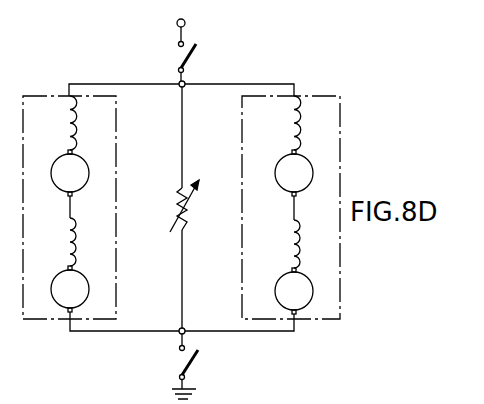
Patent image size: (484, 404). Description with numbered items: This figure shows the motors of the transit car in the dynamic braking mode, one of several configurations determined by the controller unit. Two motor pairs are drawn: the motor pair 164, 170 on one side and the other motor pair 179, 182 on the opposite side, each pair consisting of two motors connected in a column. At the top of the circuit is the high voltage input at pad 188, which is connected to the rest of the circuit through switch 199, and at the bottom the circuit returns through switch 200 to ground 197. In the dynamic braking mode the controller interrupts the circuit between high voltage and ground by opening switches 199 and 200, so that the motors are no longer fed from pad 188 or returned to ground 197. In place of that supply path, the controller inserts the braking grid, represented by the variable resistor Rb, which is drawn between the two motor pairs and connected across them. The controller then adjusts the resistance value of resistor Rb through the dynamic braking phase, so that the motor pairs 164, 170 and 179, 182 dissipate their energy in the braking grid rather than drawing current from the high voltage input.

The motor 164 is at (110, 154).
The motor 170 is at (108, 268).
The motor 179 is at (333, 154).
The motor 182 is at (331, 268).
The pad 188 is at (185, 23).
The switch 199 is at (178, 54).
The switch 200 is at (180, 359).
The ground 197 is at (172, 392).
The resistor Rb is at (175, 206).